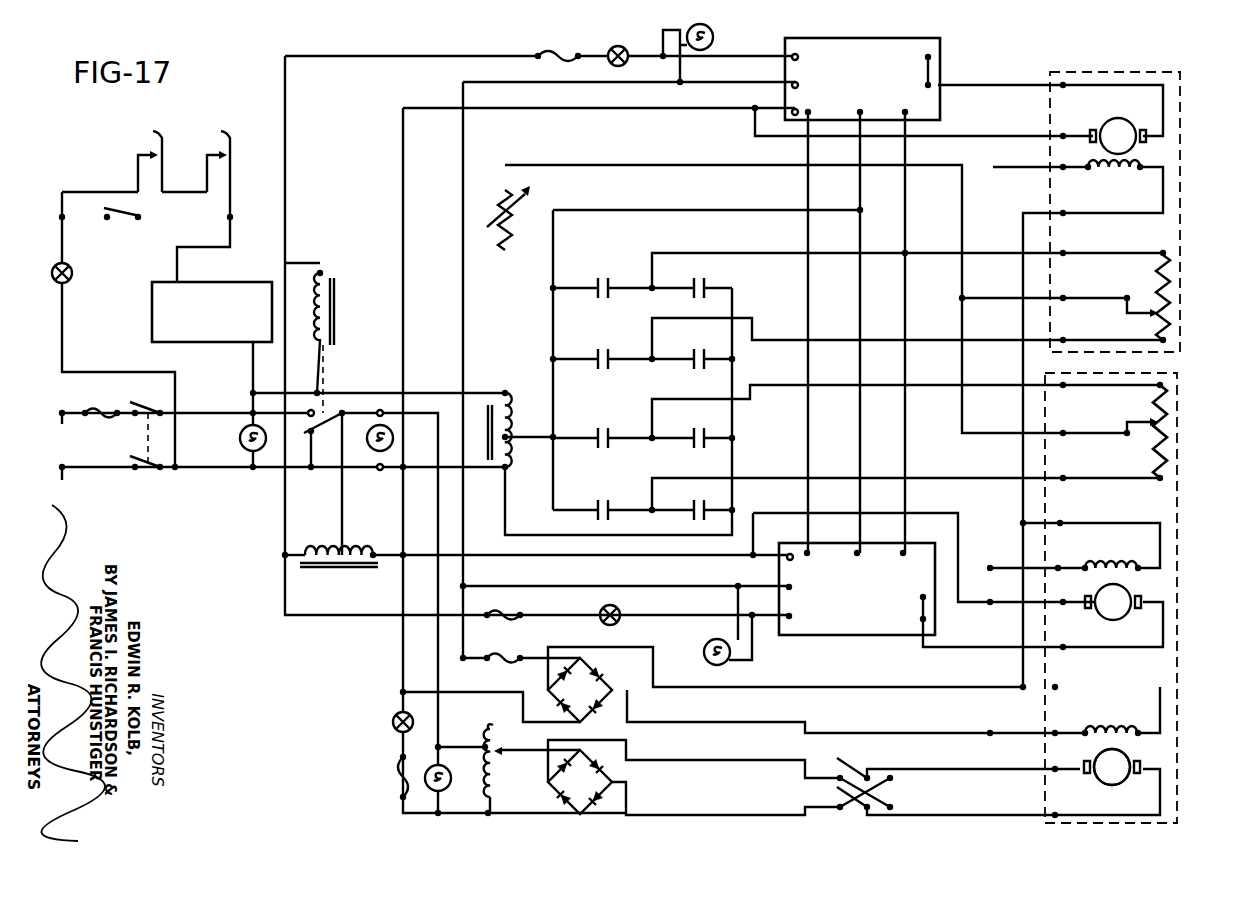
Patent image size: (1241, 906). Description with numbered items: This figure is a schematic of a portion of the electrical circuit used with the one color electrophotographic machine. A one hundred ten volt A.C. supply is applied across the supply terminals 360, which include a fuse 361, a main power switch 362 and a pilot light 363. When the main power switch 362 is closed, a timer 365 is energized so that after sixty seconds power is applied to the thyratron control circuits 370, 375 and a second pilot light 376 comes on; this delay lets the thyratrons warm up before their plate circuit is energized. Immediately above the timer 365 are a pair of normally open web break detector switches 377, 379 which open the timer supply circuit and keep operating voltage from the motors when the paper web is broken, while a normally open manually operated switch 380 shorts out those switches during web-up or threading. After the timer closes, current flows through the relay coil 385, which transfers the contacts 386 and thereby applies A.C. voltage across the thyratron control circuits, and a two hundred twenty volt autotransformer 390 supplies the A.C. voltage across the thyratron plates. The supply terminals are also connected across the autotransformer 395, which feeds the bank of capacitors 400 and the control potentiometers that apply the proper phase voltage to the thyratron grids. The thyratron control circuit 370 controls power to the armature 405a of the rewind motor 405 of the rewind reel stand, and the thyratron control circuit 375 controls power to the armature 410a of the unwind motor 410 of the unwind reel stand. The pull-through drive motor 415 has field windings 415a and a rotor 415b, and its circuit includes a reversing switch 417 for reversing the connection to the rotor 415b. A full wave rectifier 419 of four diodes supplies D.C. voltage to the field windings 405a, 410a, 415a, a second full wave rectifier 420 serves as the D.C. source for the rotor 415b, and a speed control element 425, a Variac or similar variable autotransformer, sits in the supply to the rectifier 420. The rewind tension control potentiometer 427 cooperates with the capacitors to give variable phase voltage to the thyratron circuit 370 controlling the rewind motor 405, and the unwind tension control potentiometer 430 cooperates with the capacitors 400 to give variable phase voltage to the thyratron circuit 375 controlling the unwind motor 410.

The supply terminals 360 is at (68, 457).
The fuse 361 is at (101, 418).
The main power switch 362 is at (149, 404).
The pilot light 363 is at (240, 440).
The timer 365 is at (207, 342).
The thyratron control circuit 370 is at (940, 52).
The thyratron control circuit 375 is at (850, 626).
The pilot light 376 is at (376, 452).
The web break detector switch 377 is at (153, 136).
The web break detector switch 379 is at (232, 133).
The manually operated switch 380 is at (124, 220).
The relay coil 385 is at (336, 304).
The contacts 386 is at (336, 410).
The autotransformer 390 is at (333, 570).
The autotransformer 395 is at (512, 407).
The bank of capacitors 400 is at (711, 248).
The rewind motor 405 is at (1165, 171).
The armature of the rewind motor 405a is at (1124, 174).
The unwind motor 410 is at (1165, 613).
The armature of the unwind motor 410a is at (1119, 565).
The pull-through drive motor 415 is at (1163, 774).
The field windings 415a is at (1108, 728).
The rotor 415b is at (1110, 781).
The reversing switch 417 is at (856, 770).
The full wave rectifier 419 is at (640, 668).
The full wave rectifier 420 is at (620, 774).
The speed control element 425 is at (486, 739).
The rewind tension control potentiometer 427 is at (1170, 298).
The unwind tension control potentiometer 430 is at (1165, 438).